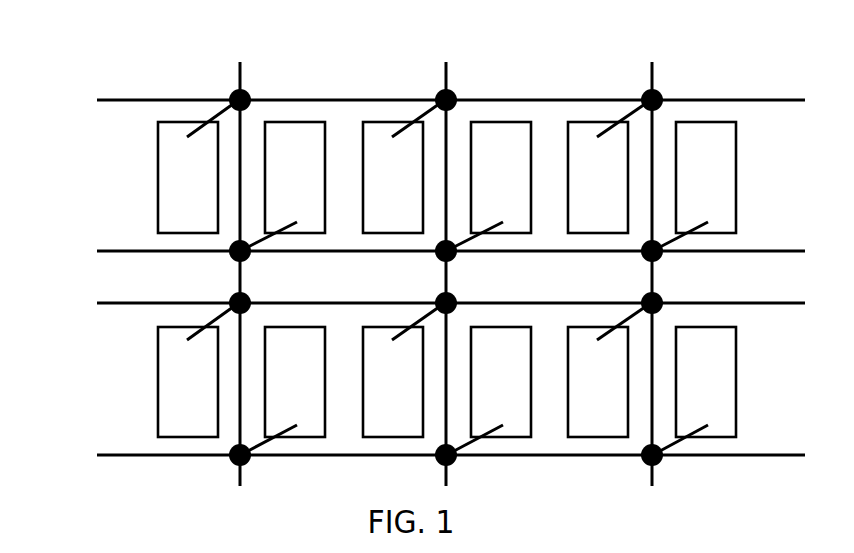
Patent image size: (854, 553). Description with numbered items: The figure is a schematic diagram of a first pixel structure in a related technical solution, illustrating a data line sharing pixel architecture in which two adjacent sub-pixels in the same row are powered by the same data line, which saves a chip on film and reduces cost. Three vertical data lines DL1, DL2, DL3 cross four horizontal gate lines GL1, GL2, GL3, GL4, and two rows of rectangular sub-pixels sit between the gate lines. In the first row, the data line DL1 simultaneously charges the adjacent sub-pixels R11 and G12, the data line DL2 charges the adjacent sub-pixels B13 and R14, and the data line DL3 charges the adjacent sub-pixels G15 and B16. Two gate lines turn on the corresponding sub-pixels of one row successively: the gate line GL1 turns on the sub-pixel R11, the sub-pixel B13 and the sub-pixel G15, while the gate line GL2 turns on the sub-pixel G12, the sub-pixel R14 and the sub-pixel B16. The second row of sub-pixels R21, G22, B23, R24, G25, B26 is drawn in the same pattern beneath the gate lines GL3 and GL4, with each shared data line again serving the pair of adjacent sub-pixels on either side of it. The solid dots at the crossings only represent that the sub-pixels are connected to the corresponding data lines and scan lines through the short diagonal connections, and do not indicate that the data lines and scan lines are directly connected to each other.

The gate line GL1 is at (418, 101).
The gate line GL2 is at (418, 252).
The gate line GL3 is at (418, 304).
The gate line GL4 is at (418, 456).
The data line DL1 is at (240, 259).
The data line DL2 is at (446, 259).
The data line DL3 is at (652, 259).
The sub-pixel R11 is at (195, 168).
The sub-pixel G12 is at (286, 184).
The sub-pixel B13 is at (401, 168).
The sub-pixel R14 is at (492, 184).
The sub-pixel G15 is at (606, 168).
The sub-pixel B16 is at (698, 184).
The sub-pixel R21 is at (195, 372).
The sub-pixel G22 is at (286, 389).
The sub-pixel B23 is at (401, 372).
The sub-pixel R24 is at (492, 389).
The sub-pixel G25 is at (606, 372).
The sub-pixel B26 is at (698, 389).